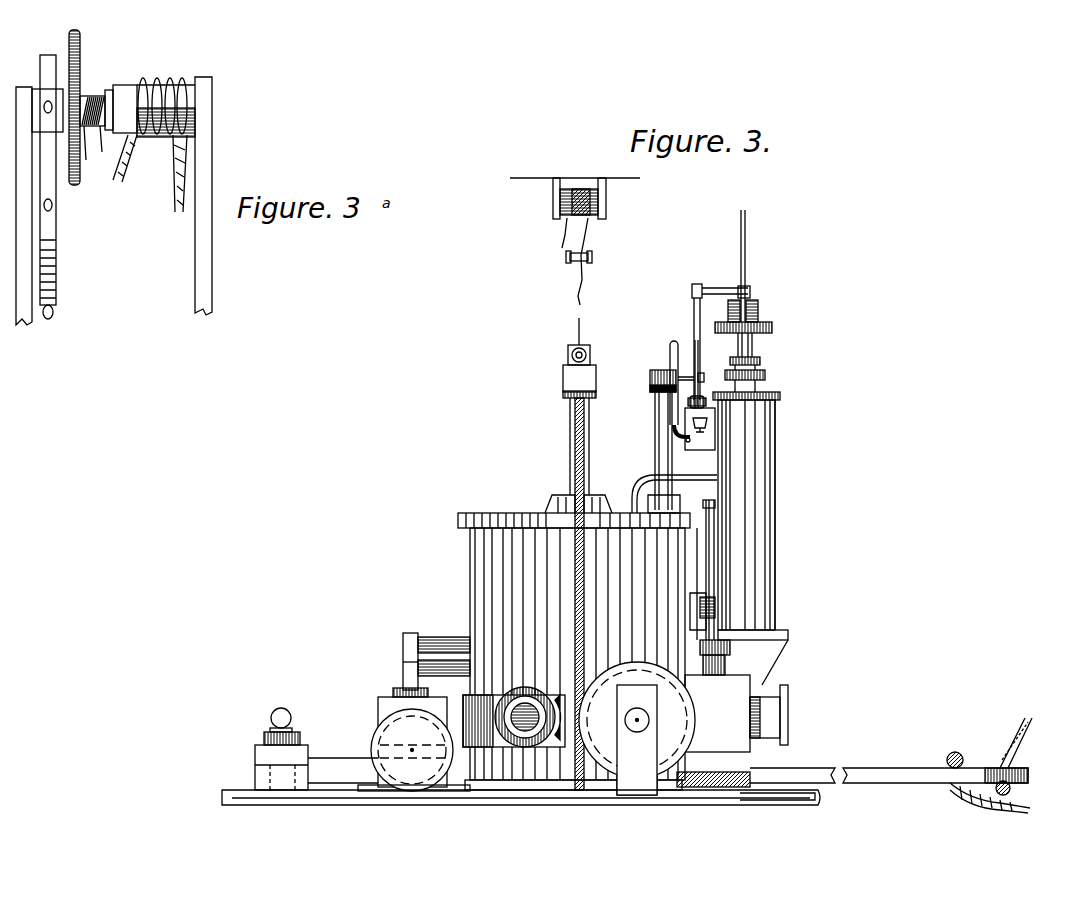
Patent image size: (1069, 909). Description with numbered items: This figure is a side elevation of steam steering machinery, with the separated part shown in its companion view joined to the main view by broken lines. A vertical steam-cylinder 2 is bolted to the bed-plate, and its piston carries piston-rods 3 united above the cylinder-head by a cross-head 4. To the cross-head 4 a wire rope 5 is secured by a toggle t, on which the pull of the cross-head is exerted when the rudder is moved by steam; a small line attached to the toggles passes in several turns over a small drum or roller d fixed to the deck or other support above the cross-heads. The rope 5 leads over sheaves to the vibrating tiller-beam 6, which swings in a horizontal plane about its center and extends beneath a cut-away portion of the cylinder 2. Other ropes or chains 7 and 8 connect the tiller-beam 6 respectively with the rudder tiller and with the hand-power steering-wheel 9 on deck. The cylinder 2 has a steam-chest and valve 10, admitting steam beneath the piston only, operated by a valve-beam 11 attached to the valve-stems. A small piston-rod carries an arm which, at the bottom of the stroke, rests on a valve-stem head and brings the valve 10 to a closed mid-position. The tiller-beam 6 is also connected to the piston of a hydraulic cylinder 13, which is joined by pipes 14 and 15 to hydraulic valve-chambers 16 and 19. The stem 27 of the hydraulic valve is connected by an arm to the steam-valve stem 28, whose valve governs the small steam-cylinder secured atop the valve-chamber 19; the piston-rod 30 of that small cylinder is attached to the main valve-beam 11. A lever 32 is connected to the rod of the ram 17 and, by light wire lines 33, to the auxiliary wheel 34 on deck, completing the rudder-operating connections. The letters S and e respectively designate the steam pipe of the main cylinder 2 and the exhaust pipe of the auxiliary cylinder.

In FIG. 3, the vertical steam-cylinder 2 is at (574, 504).
In FIG. 3, the piston-rod 3 is at (570, 443).
In FIG. 3, the cross-head 4 is at (579, 381).
In FIG. 3, the rope 5 is at (585, 446).
In FIG. 3, the tiller-beam 6 is at (625, 771).
In FIG. 3, the rope or chain 7 is at (997, 798).
In FIG. 3A, the rope or chain 8 is at (154, 135).
In FIG. 3, the rope or chain 8 is at (991, 742).
In FIG. 3A, the hand-power steering-wheel 9 is at (56, 278).
In FIG. 3, the steam-chest and valve 10 is at (717, 713).
In FIG. 3, the valve-beam 11 is at (716, 606).
In FIG. 3, the hydraulic cylinder 13 is at (414, 739).
In FIG. 3, the pipe 14 is at (507, 714).
In FIG. 3, the pipe 15 is at (560, 515).
In FIG. 3, the hydraulic valve-chamber 16 is at (750, 538).
In FIG. 3, the ram 17 is at (527, 690).
In FIG. 3, the hydraulic valve-chamber 19 is at (776, 488).
In FIG. 3, the valve-stem 27 is at (747, 362).
In FIG. 3, the steam-valve stem 28 is at (682, 379).
In FIG. 3, the piston-rod 30 is at (716, 560).
In FIG. 3, the lever 32 is at (754, 317).
In FIG. 3A, the line 33 is at (100, 130).
In FIG. 3, the line 33 is at (753, 266).
In FIG. 3A, the auxiliary wheel 34 is at (86, 103).
In FIG. 3, the drum or roller d is at (589, 198).
In FIG. 3, the toggle t is at (568, 356).
In FIG. 3, the exhaust pipe e is at (673, 407).
In FIG. 3, the steam pipe S is at (796, 712).